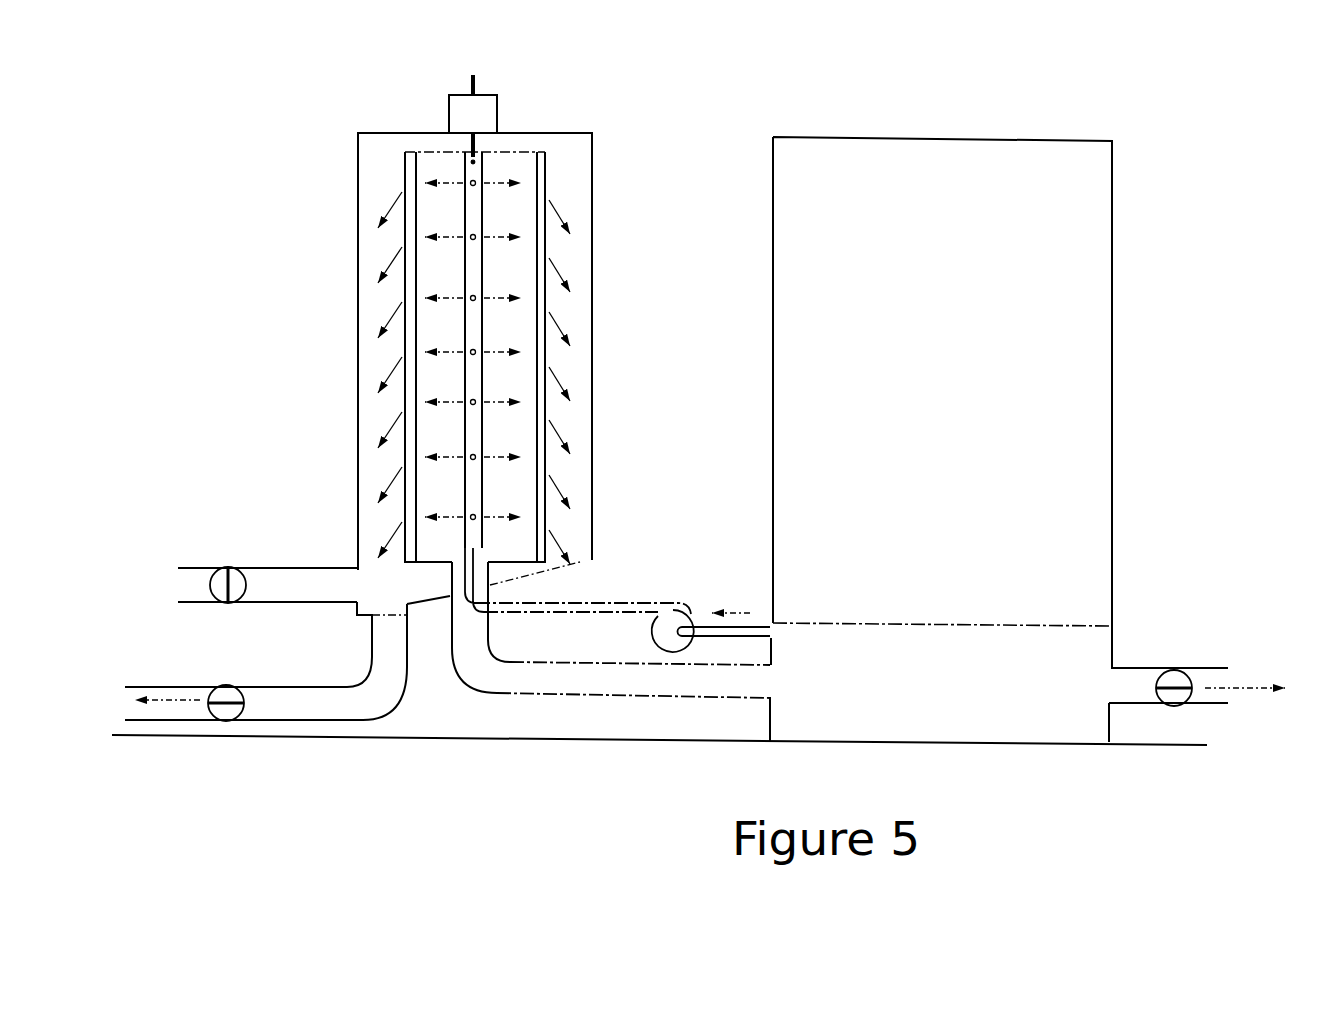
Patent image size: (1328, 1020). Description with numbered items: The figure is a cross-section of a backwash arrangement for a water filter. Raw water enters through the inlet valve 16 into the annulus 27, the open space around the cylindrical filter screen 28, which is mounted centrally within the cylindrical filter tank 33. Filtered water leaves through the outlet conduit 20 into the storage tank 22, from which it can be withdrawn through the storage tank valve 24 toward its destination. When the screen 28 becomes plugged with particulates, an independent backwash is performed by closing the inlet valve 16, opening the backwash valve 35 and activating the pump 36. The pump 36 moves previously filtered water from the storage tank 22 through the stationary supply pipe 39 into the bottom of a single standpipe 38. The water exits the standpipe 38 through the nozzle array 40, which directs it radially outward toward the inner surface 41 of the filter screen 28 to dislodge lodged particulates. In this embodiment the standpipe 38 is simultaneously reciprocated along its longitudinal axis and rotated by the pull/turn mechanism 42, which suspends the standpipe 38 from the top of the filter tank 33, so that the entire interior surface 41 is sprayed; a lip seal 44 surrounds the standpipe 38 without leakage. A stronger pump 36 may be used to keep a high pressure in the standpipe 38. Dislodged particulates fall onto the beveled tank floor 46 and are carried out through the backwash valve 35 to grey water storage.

The inlet valve 16 is at (228, 575).
The outlet conduit 20 is at (538, 682).
The storage tank 22 is at (1112, 490).
The storage tank valve 24 is at (1172, 683).
The annulus 27 is at (372, 290).
The filter screen 28 is at (402, 368).
The filter tank 33 is at (358, 167).
The backwash valve 35 is at (226, 708).
The pump 36 is at (688, 612).
The standpipe 38 is at (480, 368).
The stationary supply pipe 39 is at (592, 603).
The nozzles 40 is at (476, 297).
The inner surface 41 is at (413, 492).
The pull/turn mechanism 42 is at (478, 113).
The lip seal 44 is at (482, 546).
The beveled tank floor 46 is at (432, 600).